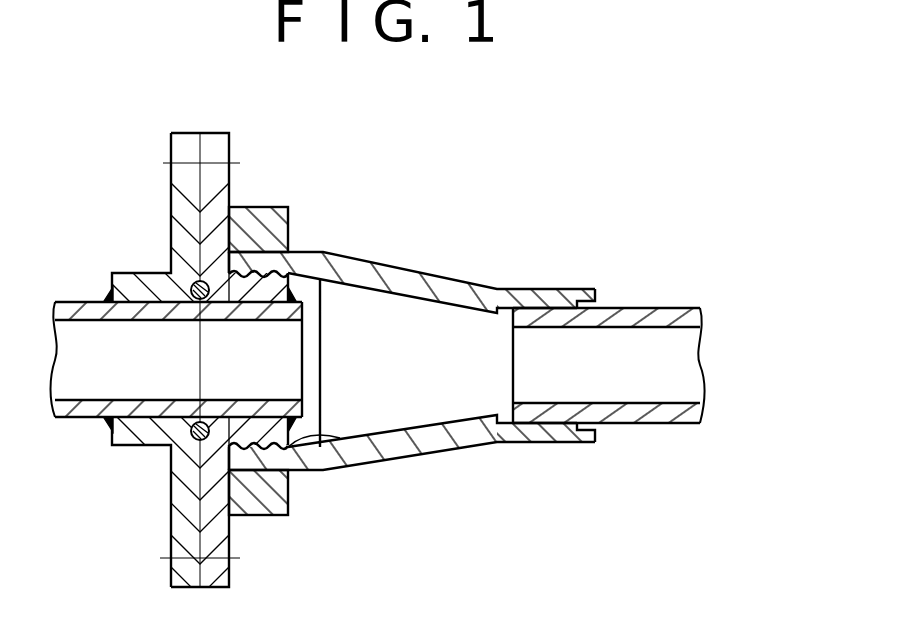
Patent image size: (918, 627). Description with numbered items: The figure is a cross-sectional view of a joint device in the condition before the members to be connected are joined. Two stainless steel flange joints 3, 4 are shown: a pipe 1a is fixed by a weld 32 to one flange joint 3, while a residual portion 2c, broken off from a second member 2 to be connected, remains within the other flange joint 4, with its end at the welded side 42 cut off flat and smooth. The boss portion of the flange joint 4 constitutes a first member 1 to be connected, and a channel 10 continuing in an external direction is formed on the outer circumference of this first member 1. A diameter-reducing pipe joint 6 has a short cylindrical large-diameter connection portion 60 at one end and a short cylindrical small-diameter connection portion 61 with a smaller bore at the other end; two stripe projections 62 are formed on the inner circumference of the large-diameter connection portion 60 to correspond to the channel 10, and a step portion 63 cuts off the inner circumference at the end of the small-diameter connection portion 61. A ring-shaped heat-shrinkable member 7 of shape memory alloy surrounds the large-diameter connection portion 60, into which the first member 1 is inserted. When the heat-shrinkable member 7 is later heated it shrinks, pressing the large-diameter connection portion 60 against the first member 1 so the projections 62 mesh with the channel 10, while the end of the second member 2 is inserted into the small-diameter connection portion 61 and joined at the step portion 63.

The first member to be connected 1 is at (272, 296).
The pipe 1a is at (83, 372).
The second member to be connected 2 is at (646, 424).
The residual portion 2c is at (213, 377).
The flange joint 3 is at (171, 188).
The flange joint 4 is at (229, 137).
The diameter-reducing pipe joint 6 is at (432, 270).
The heat-shrinkable member 7 is at (288, 222).
The channel 10 is at (253, 298).
The weld 32 is at (104, 430).
The welded side end portion 42 is at (292, 430).
The large-diameter connection portion 60 is at (246, 255).
The small-diameter connection portion 61 is at (542, 289).
The stripe projections 62 is at (274, 268).
The step portion 63 is at (598, 298).